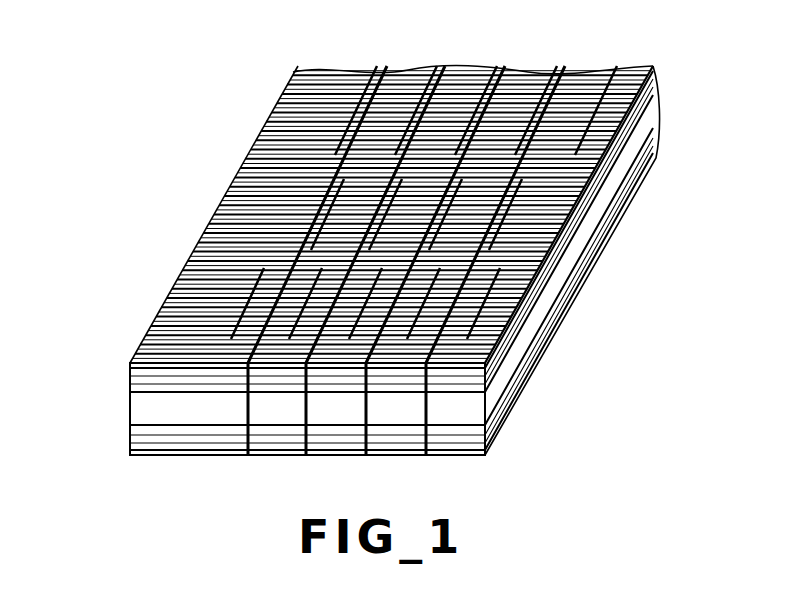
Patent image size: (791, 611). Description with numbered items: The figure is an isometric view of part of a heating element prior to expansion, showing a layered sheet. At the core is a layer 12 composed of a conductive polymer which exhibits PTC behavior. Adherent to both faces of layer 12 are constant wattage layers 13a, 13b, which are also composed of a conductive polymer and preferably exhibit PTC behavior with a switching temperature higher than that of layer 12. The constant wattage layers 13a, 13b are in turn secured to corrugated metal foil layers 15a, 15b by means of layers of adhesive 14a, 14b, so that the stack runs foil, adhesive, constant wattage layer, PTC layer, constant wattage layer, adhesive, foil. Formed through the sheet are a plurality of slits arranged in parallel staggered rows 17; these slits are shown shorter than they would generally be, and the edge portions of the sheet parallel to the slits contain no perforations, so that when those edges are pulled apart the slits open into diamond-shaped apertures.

The layer 12 is at (124, 402).
The constant wattage layer 13a is at (124, 425).
The constant wattage layer 13b is at (124, 372).
The layer of adhesive 14a is at (124, 436).
The layer of adhesive 14b is at (124, 362).
The corrugated metal foil layer 15a is at (146, 448).
The corrugated metal foil layer 15b is at (203, 231).
The parallel staggered rows 17 is at (428, 62).